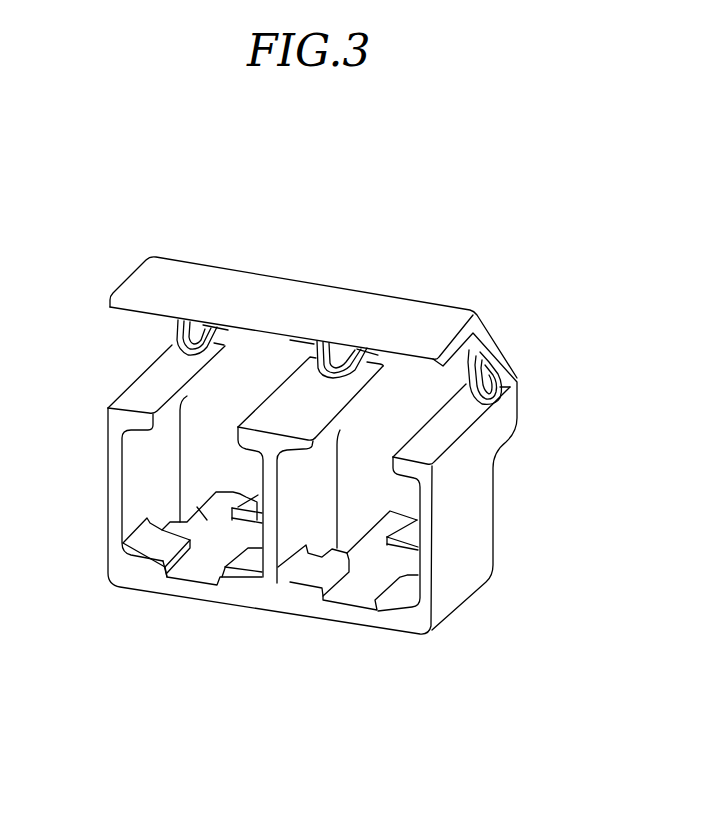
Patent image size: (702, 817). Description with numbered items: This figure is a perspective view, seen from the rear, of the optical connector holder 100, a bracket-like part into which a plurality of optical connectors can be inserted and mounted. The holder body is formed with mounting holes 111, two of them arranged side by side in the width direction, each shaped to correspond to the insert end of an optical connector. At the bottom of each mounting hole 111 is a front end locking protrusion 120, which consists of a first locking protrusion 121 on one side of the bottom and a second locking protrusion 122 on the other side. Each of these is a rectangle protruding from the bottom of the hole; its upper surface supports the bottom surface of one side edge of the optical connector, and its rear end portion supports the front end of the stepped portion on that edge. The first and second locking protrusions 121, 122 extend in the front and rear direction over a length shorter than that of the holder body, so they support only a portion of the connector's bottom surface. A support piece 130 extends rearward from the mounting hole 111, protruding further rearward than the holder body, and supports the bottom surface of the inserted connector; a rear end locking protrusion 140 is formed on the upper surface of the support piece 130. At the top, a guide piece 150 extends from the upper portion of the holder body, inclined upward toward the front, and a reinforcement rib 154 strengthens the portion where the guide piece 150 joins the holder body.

The optical connector holder 100 is at (390, 238).
The mounting hole 111 is at (258, 470).
The front end locking protrusion 120 is at (221, 656).
The first locking protrusion 121 is at (246, 568).
The second locking protrusion 122 is at (140, 548).
The support piece 130 is at (198, 508).
The rear end locking protrusion 140 is at (258, 495).
The guide piece 150 is at (490, 346).
The reinforcement rib 154 is at (500, 388).